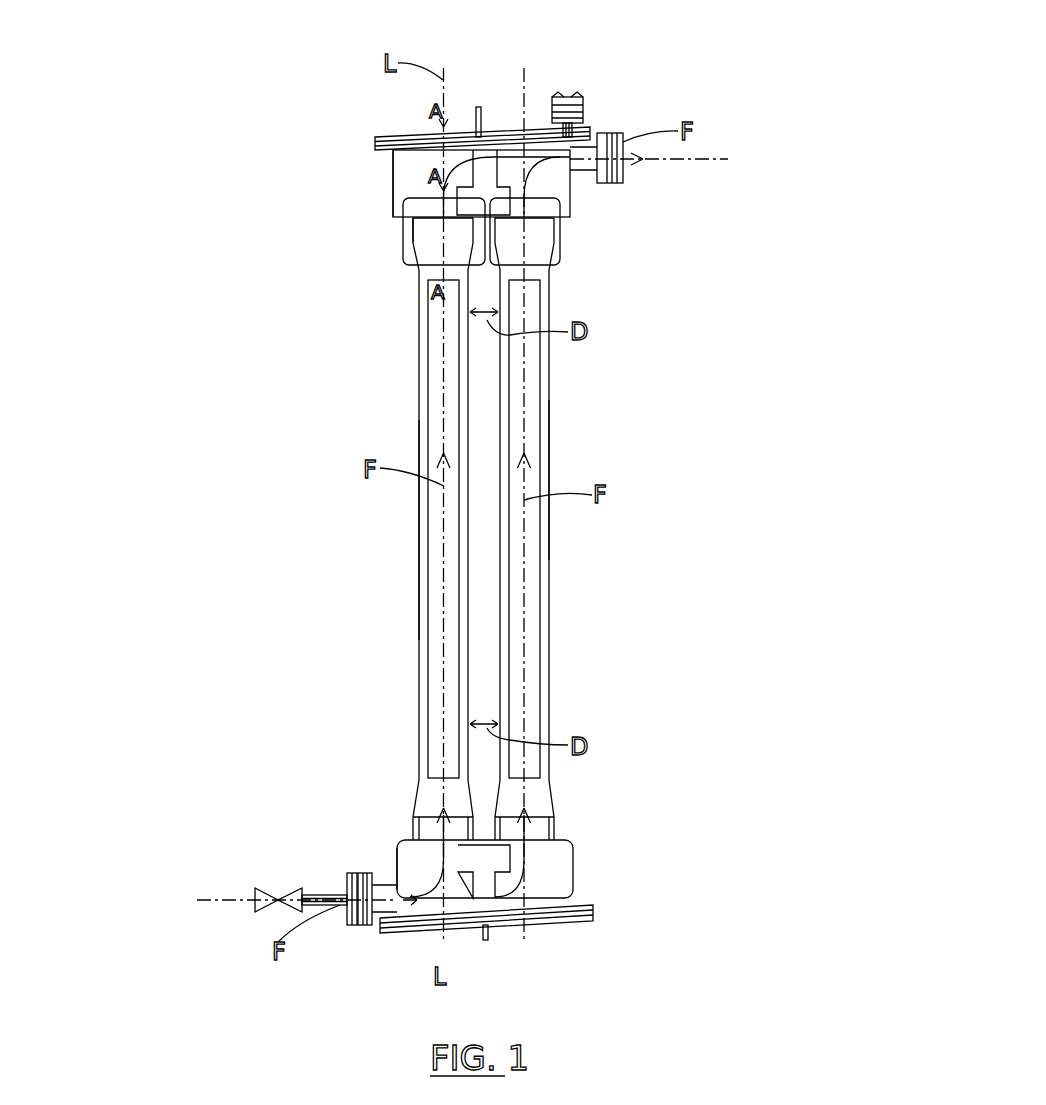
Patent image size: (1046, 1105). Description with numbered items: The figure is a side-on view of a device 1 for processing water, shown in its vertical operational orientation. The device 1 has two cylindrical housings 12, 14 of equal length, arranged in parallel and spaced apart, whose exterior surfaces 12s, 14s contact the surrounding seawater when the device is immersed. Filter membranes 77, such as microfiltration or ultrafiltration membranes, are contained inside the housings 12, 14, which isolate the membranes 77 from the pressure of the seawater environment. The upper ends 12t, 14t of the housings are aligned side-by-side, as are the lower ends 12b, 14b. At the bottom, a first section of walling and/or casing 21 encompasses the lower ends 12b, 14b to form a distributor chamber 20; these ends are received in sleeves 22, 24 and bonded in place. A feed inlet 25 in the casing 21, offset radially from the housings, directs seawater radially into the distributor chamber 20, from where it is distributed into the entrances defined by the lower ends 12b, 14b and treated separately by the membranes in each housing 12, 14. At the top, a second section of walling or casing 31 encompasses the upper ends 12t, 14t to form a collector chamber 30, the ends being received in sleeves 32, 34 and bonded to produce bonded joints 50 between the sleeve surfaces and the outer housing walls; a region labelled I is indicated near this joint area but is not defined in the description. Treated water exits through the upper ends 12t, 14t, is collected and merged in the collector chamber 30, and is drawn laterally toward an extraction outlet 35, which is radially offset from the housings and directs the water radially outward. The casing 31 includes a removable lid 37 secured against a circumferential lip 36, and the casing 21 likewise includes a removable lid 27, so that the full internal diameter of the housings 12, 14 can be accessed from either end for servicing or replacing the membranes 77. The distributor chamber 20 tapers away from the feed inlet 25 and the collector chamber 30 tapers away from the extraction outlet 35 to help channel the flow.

The device 1 is at (548, 40).
The cylindrical housing 12 is at (419, 392).
The exterior surface 12s is at (419, 533).
The upper end 12t is at (480, 258).
The lower end 12b is at (470, 820).
The cylindrical housing 14 is at (549, 577).
The exterior surface 14s is at (550, 467).
The upper end 14t is at (554, 225).
The lower end 14b is at (556, 823).
The distributor chamber 20 is at (590, 868).
The walling and/or casing 21 is at (413, 827).
The sleeve 22 is at (413, 832).
The sleeve 24 is at (545, 832).
The feed inlet 25 is at (363, 918).
The removable lid 27 is at (578, 927).
The collector chamber 30 is at (358, 156).
The walling or casing 31 is at (413, 188).
The sleeve 32 is at (402, 223).
The sleeve 34 is at (577, 192).
The extraction outlet 35 is at (615, 133).
The circumferential lip 36 is at (393, 183).
The removable lid 37 is at (403, 136).
The bonded joint 50 is at (430, 245).
The filter membranes 77 is at (428, 338).
The interface I is at (402, 233).